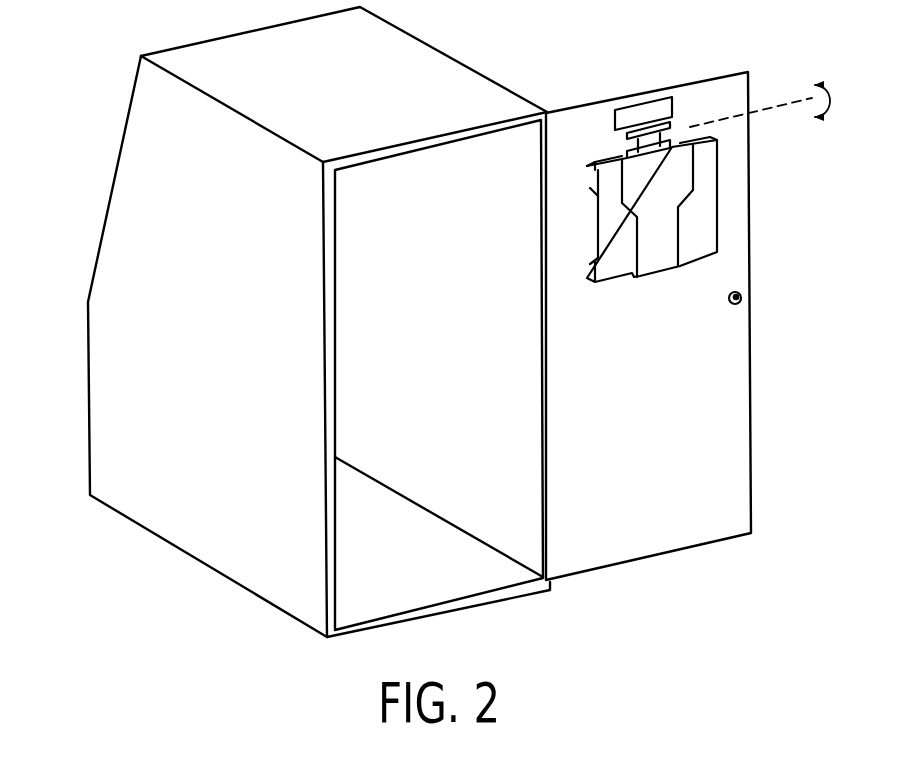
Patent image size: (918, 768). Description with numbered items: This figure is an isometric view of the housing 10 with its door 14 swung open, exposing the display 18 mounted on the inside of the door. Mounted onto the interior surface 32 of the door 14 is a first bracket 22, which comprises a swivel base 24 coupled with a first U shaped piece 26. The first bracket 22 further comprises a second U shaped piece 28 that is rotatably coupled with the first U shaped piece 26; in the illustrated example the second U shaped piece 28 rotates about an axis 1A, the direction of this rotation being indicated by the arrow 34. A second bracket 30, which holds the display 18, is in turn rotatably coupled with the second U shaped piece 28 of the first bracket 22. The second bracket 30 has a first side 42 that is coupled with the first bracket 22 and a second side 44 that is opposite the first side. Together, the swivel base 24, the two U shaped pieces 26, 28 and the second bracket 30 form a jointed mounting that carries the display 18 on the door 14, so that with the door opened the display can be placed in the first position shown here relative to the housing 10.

The housing 10 is at (95, 140).
The door 14 is at (750, 176).
The display 18 is at (598, 237).
The first bracket 22 is at (639, 91).
The swivel base 24 is at (648, 108).
The first U shaped piece 26 is at (678, 126).
The second U shaped piece 28 is at (628, 146).
The second bracket 30 is at (660, 263).
The interior surface 32 is at (737, 468).
The arrow 34 is at (831, 100).
The first side 42 is at (689, 127).
The second side 44 is at (640, 290).
The axis 1A is at (781, 106).